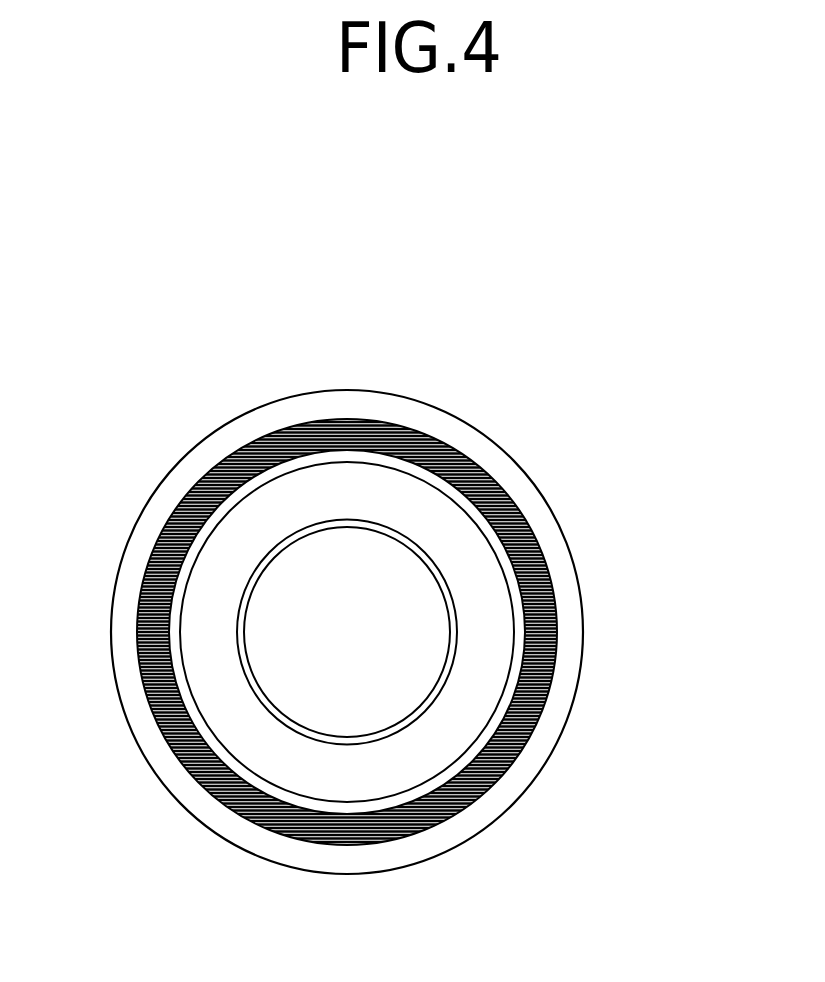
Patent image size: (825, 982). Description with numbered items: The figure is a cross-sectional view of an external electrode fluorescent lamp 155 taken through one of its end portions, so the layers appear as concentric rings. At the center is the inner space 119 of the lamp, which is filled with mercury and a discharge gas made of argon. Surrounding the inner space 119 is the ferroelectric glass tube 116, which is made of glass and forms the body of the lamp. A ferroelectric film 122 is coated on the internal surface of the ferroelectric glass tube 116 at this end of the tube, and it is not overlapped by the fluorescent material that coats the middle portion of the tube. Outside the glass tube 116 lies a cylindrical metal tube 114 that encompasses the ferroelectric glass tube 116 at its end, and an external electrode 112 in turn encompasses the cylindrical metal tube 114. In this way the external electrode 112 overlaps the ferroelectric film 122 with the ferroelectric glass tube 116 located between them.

The external electrode fluorescent lamp 155 is at (622, 368).
The external electrode 112 is at (520, 505).
The cylindrical metal tube 114 is at (462, 814).
The ferroelectric glass tube 116 is at (470, 707).
The ferroelectric film 122 is at (457, 613).
The inner space 119 is at (328, 647).